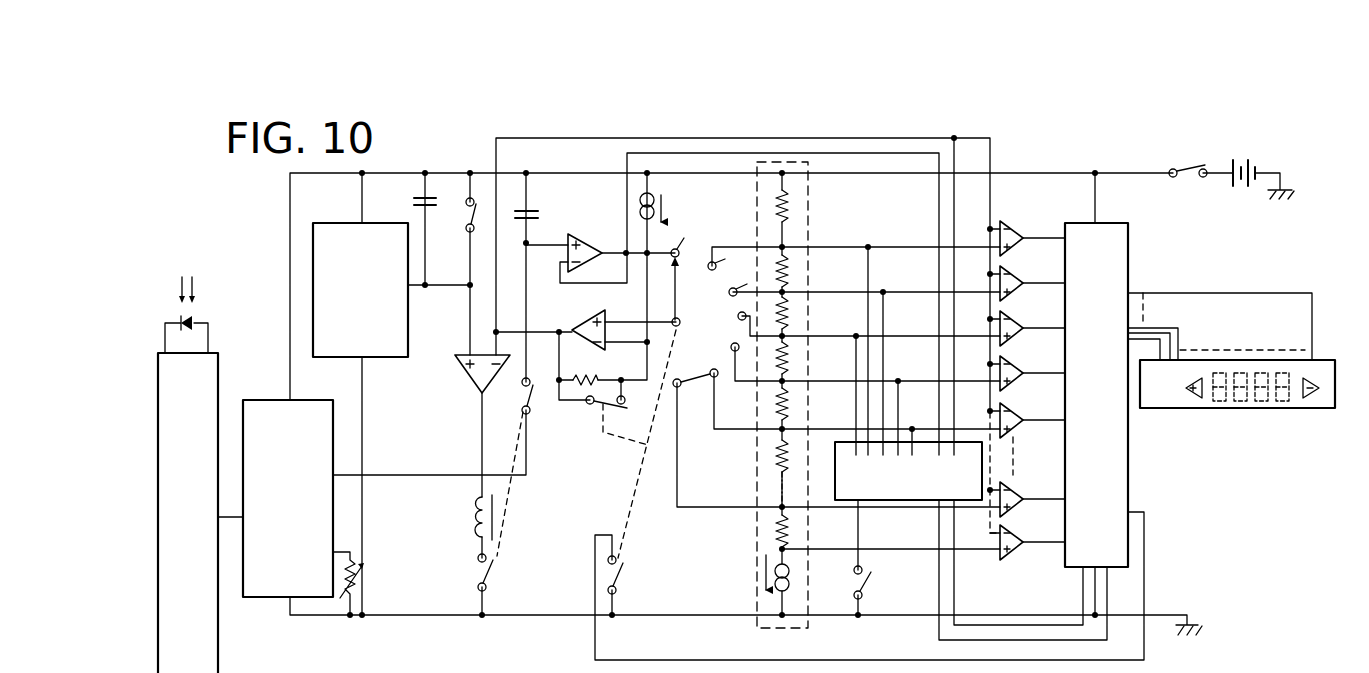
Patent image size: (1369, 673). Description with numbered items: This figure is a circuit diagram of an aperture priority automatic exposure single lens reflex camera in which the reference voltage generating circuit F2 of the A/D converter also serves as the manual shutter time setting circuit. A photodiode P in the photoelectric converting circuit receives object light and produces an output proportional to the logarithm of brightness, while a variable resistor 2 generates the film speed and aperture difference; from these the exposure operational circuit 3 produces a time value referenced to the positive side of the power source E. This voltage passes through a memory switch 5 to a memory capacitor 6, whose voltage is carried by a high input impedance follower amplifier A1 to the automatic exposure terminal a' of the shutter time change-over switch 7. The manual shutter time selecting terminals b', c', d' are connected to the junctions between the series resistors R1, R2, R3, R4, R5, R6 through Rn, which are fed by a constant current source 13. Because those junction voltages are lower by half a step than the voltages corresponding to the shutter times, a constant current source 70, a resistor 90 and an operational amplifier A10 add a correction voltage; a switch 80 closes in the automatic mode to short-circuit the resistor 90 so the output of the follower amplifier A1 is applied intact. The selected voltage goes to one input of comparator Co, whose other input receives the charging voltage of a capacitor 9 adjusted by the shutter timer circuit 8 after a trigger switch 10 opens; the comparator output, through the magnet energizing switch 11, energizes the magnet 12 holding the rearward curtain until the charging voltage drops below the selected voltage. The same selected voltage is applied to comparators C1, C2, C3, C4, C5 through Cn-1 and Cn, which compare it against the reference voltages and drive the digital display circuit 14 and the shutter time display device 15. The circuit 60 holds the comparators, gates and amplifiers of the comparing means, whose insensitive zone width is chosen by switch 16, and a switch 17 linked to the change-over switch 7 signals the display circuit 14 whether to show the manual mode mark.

The variable resistor 2 is at (352, 560).
The exposure operational circuit 3 is at (268, 598).
The memory switch 5 is at (523, 396).
The memory capacitor 6 is at (540, 214).
The shutter time change-over switch 7 is at (682, 325).
The shutter timer circuit 8 is at (390, 358).
The capacitor 9 is at (413, 201).
The trigger switch 10 is at (468, 212).
The magnet energizing switch 11 is at (490, 568).
The magnet 12 is at (474, 516).
The constant current source 13 is at (792, 572).
The digital display circuit 14 is at (1130, 462).
The shutter time display device 15 is at (1248, 410).
The insensitive zone width change-over switch 16 is at (873, 578).
The switch 17 is at (622, 567).
The circuit 60 is at (905, 503).
The constant current source 70 is at (665, 205).
The switch 80 is at (606, 409).
The resistor 90 is at (595, 378).
The photodiode P is at (193, 320).
The power source E is at (1237, 188).
The follower amplifier A1 is at (586, 233).
The operational amplifier A10 is at (578, 318).
The comparator Co is at (466, 378).
The comparator C1 is at (1017, 224).
The comparator C2 is at (1017, 270).
The comparator C3 is at (1017, 316).
The comparator C4 is at (1017, 360).
The comparator C5 is at (1017, 407).
The comparator Cn-1 is at (1014, 507).
The comparator Cn is at (1015, 554).
The resistor R1 is at (794, 212).
The resistor R2 is at (794, 270).
The resistor R3 is at (794, 314).
The resistor R4 is at (794, 358).
The resistor R5 is at (794, 404).
The resistor R6 is at (776, 456).
The resistor Rn is at (776, 532).
The reference voltage generating circuit F2 is at (808, 192).
The automatic exposure terminal a' is at (685, 237).
The manual shutter time selecting terminal b' is at (732, 259).
The manual shutter time selecting terminal c' is at (752, 279).
The manual shutter time selecting terminal d' is at (723, 310).